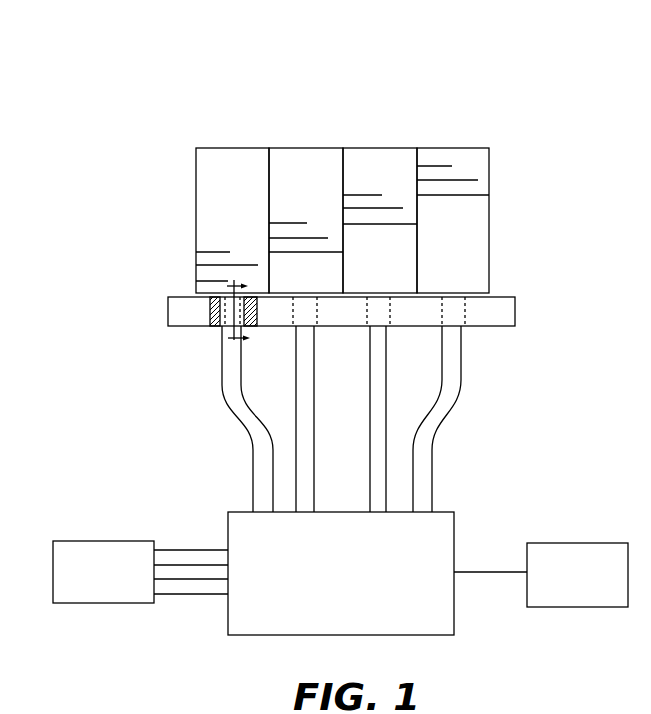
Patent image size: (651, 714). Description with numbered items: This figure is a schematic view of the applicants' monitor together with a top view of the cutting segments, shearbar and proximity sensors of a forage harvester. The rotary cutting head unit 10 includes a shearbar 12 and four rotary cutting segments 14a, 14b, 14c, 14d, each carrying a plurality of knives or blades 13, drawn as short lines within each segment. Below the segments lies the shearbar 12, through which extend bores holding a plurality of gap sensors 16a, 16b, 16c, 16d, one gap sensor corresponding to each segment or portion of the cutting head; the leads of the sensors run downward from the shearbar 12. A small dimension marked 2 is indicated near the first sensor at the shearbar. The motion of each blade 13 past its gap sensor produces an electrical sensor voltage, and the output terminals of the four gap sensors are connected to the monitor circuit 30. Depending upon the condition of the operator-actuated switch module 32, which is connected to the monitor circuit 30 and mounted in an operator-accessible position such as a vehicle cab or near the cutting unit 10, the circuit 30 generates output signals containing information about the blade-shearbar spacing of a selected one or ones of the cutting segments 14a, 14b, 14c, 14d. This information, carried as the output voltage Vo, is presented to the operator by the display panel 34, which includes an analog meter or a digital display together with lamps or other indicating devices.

The rotary cutting head unit 10 is at (142, 153).
The shearbar 12 is at (167, 310).
The knives or blades 13 is at (200, 273).
The rotary cutting segment 14a is at (229, 146).
The rotary cutting segment 14b is at (304, 146).
The rotary cutting segment 14c is at (378, 146).
The rotary cutting segment 14d is at (455, 146).
The spacing dimension 2 is at (243, 315).
The gap sensor 16a is at (213, 334).
The gap sensor 16b is at (290, 336).
The gap sensor 16c is at (362, 342).
The gap sensor 16d is at (437, 340).
The monitor circuit 30 is at (277, 636).
The operator-actuated switch module 32 is at (110, 540).
The display panel 34 is at (580, 542).